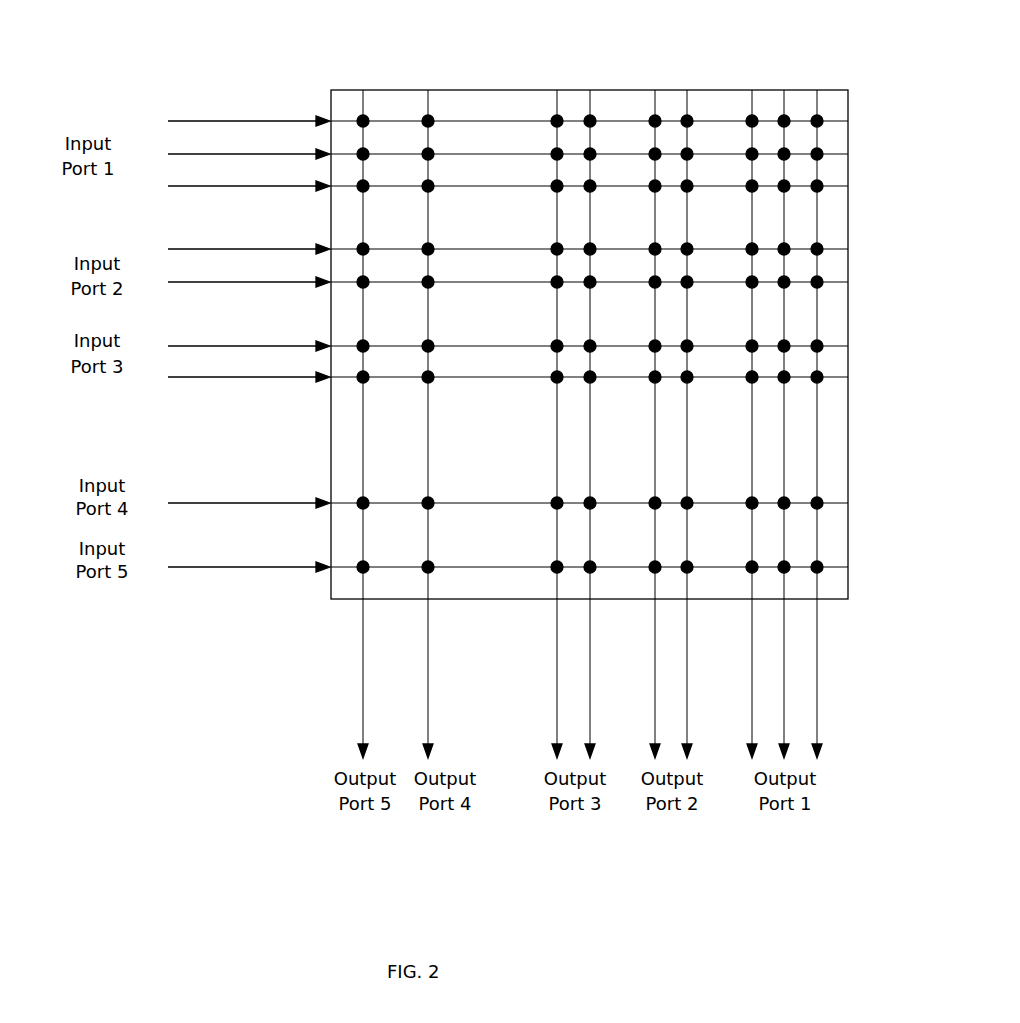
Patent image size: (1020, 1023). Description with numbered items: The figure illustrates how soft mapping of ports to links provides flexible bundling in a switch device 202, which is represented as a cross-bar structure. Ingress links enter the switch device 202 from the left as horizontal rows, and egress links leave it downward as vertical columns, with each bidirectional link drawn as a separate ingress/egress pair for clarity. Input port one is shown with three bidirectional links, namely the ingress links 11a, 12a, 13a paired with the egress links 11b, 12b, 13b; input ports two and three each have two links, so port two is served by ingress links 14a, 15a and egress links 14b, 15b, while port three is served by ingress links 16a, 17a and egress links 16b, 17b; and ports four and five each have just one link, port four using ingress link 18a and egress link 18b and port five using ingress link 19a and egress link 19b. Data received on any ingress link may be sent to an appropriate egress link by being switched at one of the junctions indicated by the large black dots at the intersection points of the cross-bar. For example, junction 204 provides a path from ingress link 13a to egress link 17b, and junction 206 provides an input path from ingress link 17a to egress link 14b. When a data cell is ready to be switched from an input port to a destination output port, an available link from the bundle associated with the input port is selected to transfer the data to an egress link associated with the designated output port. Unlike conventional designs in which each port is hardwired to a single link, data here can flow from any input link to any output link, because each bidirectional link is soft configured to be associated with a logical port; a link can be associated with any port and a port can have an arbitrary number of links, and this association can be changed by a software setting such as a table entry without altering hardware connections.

The switch device 202 is at (600, 88).
The junction 204 is at (552, 191).
The junction 206 is at (703, 387).
The ingress link 11a is at (186, 121).
The ingress link 12a is at (186, 154).
The ingress link 13a is at (186, 186).
The ingress link 14a is at (186, 249).
The ingress link 15a is at (186, 282).
The ingress link 16a is at (186, 346).
The ingress link 17a is at (186, 377).
The ingress link 18a is at (186, 503).
The ingress link 19a is at (186, 567).
The egress link 11b is at (817, 727).
The egress link 12b is at (785, 700).
The egress link 13b is at (752, 743).
The egress link 14b is at (687, 710).
The egress link 15b is at (655, 727).
The egress link 16b is at (590, 690).
The egress link 17b is at (557, 695).
The egress link 18b is at (428, 695).
The egress link 19b is at (363, 695).